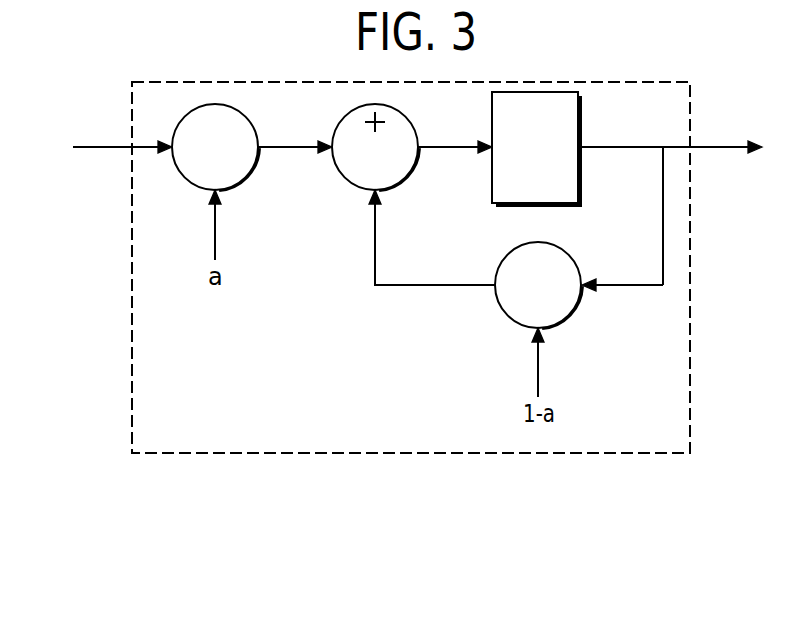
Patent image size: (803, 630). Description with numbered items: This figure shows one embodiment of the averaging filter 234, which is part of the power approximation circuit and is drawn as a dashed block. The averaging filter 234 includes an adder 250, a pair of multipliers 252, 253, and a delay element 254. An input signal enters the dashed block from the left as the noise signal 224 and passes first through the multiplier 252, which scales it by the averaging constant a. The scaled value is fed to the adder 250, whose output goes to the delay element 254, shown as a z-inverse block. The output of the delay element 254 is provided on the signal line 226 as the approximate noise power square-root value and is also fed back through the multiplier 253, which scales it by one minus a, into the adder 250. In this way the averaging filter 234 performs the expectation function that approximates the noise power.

The noise signal 224 is at (90, 143).
The signal line 226 is at (727, 143).
The averaging filter 234 is at (204, 430).
The adder 250 is at (394, 168).
The multiplier 252 is at (234, 170).
The multiplier 253 is at (557, 306).
The delay element 254 is at (553, 180).